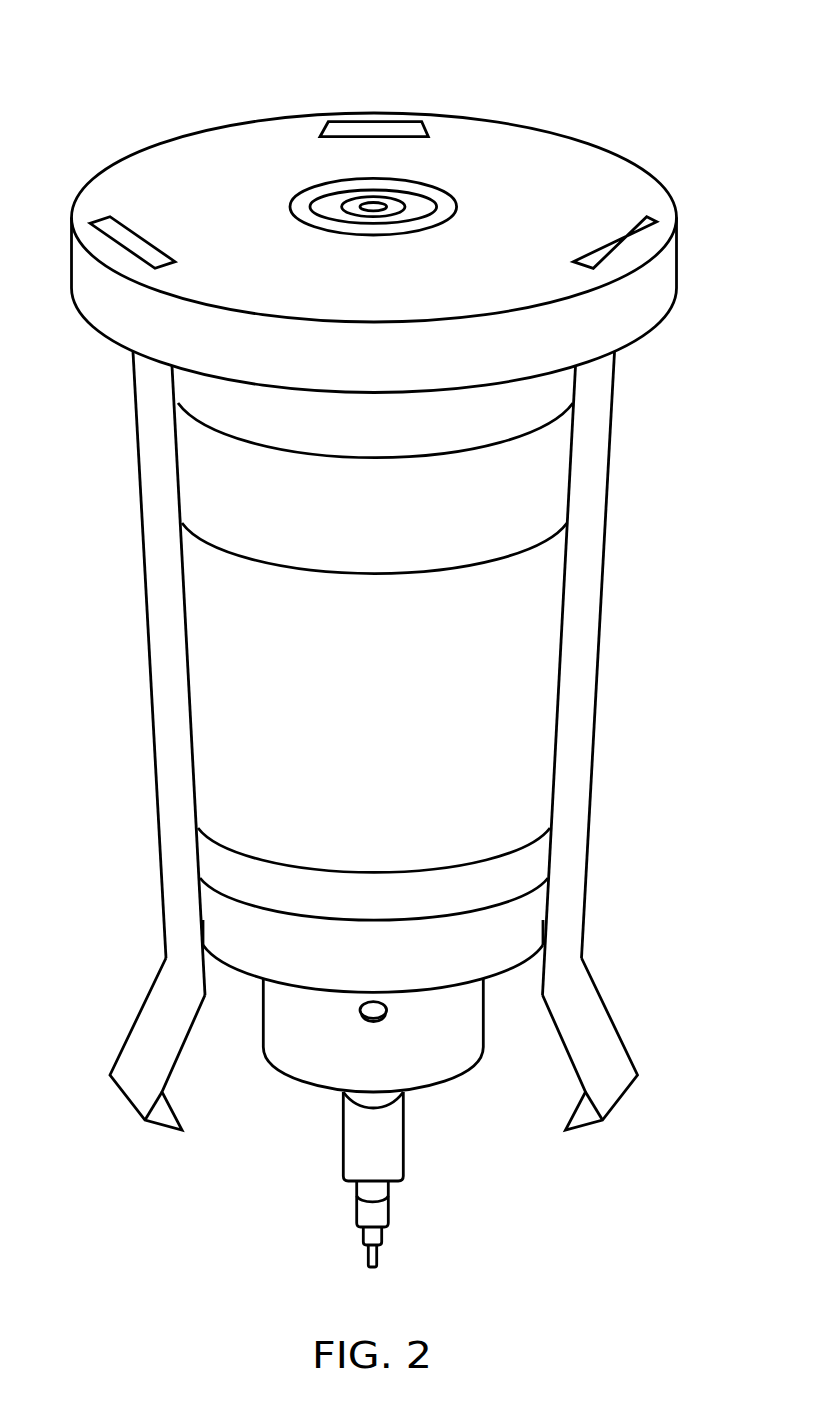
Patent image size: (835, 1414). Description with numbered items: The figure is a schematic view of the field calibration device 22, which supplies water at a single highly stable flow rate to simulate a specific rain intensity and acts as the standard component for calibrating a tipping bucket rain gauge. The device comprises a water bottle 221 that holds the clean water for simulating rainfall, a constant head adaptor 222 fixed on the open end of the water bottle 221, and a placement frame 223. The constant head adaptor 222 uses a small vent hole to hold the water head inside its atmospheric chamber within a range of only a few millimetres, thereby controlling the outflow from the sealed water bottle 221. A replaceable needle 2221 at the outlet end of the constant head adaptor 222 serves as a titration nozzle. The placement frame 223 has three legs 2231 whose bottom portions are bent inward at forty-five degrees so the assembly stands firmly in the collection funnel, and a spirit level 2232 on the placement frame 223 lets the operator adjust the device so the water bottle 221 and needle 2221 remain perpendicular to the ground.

The field calibration device 22 is at (120, 60).
The water bottle 221 is at (513, 685).
The constant head adaptor 222 is at (463, 1025).
The needle 2221 is at (380, 1235).
The placement frame 223 is at (587, 470).
The leg 2231 is at (600, 1060).
The spirit level 2232 is at (427, 182).